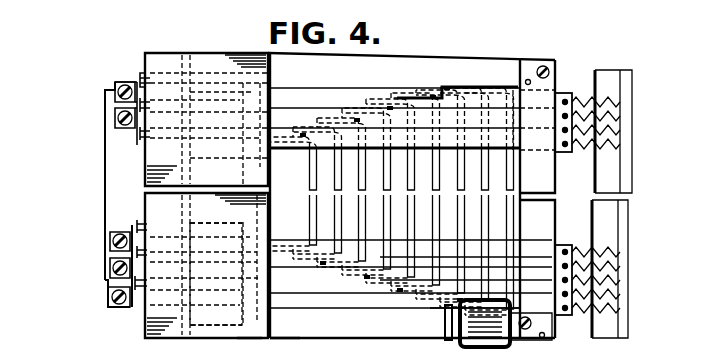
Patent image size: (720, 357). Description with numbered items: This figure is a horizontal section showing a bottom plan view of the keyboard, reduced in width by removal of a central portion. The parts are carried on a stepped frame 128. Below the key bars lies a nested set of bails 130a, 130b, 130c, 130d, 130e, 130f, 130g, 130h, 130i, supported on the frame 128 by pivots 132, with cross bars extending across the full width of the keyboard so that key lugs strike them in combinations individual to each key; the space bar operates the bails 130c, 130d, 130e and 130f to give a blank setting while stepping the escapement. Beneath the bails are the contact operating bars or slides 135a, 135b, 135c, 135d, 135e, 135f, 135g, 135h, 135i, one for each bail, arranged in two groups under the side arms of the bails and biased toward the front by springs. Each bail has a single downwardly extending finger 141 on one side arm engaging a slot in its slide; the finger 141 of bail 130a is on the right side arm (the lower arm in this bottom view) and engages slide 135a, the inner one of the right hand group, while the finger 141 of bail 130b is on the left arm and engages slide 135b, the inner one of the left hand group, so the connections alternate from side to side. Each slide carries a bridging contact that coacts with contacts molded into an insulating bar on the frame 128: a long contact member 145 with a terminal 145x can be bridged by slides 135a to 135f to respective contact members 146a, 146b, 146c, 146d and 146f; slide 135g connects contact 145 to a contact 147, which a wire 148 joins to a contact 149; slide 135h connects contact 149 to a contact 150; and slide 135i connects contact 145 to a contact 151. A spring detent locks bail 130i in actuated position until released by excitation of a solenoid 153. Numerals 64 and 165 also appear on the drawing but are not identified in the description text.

The stepped frame 128 is at (432, 63).
The pivots 132 is at (407, 93).
The bail 130a is at (313, 198).
The bail 130b is at (318, 163).
The bail 130c is at (360, 173).
The bail 130d is at (388, 163).
The bail 130e is at (412, 218).
The bail 130f is at (442, 170).
The bail 130g is at (463, 198).
The bail 130h is at (487, 165).
The bail 130i is at (497, 93).
The contact operating bar 135a is at (560, 245).
The contact operating bar 135b is at (562, 153).
The contact operating bar 135c is at (563, 266).
The contact operating bar 135d is at (563, 130).
The contact operating bar 135e is at (563, 294).
The contact operating bar 135f is at (567, 100).
The contact operating bar 135g is at (308, 247).
The contact operating bar 135h is at (562, 114).
The contact operating bar 135i is at (556, 314).
The finger 141 is at (410, 297).
The long contact member 145 is at (240, 317).
The terminal 145x is at (138, 228).
The contact member 146a is at (110, 233).
The contact member 146b is at (143, 138).
The contact member 146c is at (137, 252).
The contact member 146d is at (115, 117).
The contact member 146f is at (143, 106).
The contact 147 is at (125, 307).
The wire 148 is at (103, 160).
The contact 149 is at (118, 82).
The contact 150 is at (145, 75).
The contact 151 is at (108, 293).
The solenoid 153 is at (507, 345).
The board edge 64 is at (249, 347).
The board edge 165 is at (286, 347).